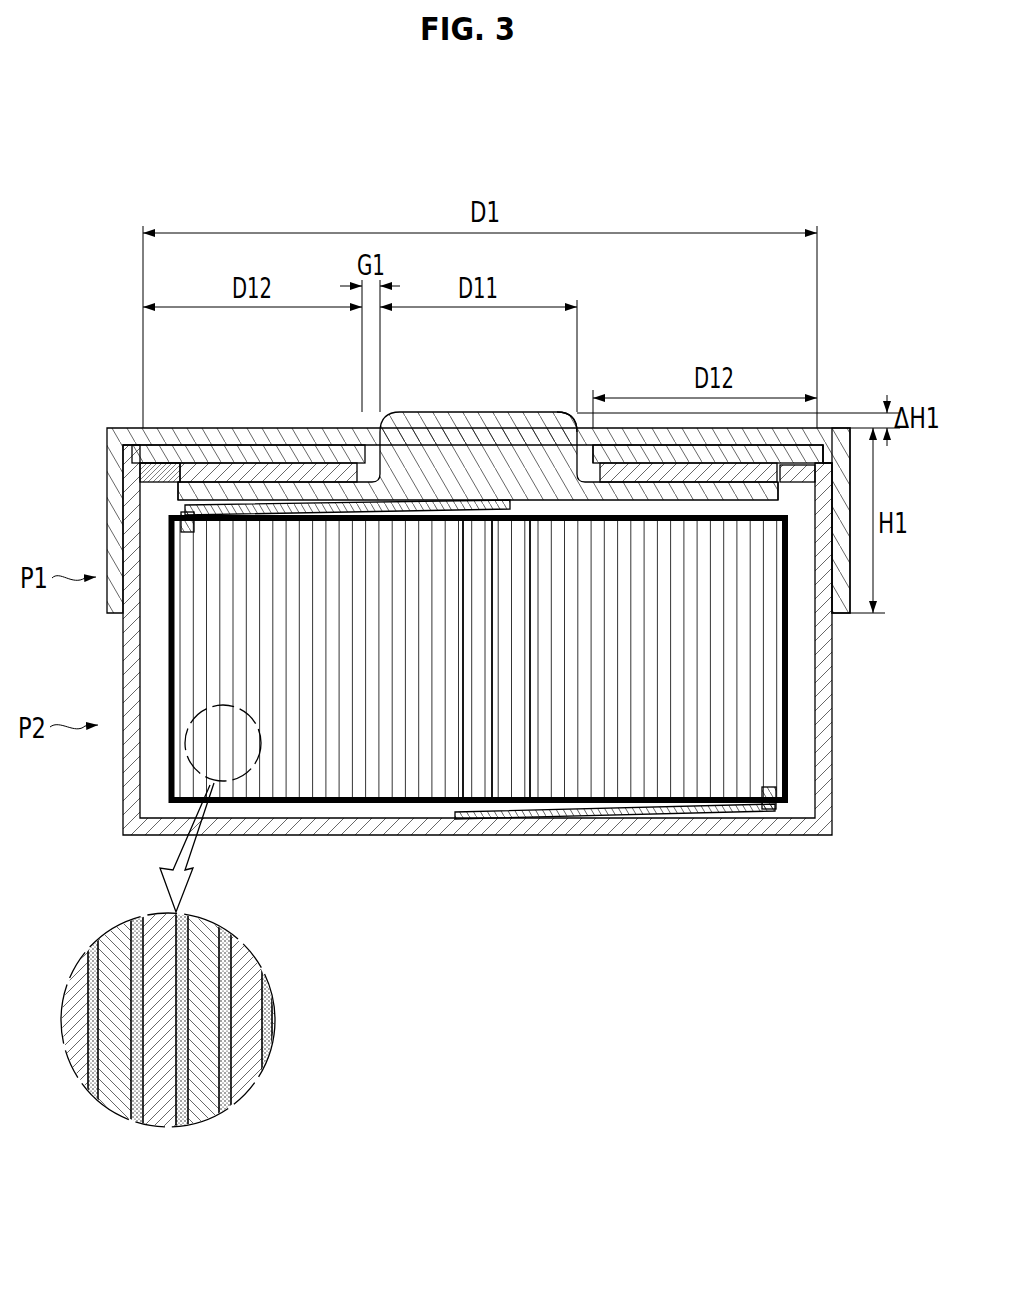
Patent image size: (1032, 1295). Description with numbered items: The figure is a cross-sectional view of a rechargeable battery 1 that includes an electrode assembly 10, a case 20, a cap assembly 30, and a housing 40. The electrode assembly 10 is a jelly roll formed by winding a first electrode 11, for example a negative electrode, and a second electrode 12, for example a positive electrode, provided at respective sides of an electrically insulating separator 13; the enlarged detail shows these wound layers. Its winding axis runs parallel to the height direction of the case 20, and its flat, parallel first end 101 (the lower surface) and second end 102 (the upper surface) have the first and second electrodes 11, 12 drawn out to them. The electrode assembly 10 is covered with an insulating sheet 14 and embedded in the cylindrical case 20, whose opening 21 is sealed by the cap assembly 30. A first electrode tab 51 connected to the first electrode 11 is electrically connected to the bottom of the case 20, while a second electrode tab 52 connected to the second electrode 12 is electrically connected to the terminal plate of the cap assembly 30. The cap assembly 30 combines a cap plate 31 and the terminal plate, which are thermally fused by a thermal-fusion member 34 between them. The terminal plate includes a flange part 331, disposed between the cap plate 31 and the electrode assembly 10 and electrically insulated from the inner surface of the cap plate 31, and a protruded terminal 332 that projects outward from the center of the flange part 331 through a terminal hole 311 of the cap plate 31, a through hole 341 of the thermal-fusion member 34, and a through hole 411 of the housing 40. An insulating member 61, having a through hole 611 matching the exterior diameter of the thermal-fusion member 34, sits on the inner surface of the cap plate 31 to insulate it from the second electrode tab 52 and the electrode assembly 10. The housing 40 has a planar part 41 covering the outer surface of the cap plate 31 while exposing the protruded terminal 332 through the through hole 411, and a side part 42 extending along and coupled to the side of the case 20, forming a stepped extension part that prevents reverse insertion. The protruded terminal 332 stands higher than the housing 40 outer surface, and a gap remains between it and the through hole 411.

The rechargeable battery 1 is at (494, 170).
The electrode assembly 10 is at (518, 624).
The first end 101 is at (397, 808).
The second end 102 is at (529, 500).
The first electrode 11 is at (162, 1117).
The second electrode 12 is at (205, 1117).
The separator 13 is at (226, 1040).
The insulating sheet 14 is at (790, 700).
The case 20 is at (128, 678).
The opening 21 is at (826, 450).
The cap assembly 30 is at (784, 495).
The cap plate 31 is at (221, 455).
The terminal hole 311 is at (566, 427).
The flange part 331 is at (336, 492).
The protruded terminal 332 is at (435, 413).
The thermal-fusion member 34 is at (272, 472).
The through hole 341 is at (628, 472).
The housing 40 is at (92, 433).
The planar part 41 is at (768, 455).
The through hole 411 is at (587, 445).
The side part 42 is at (845, 575).
The first electrode tab 51 is at (660, 812).
The second electrode tab 52 is at (165, 503).
The insulating member 61 is at (150, 472).
The through hole 611 is at (163, 462).